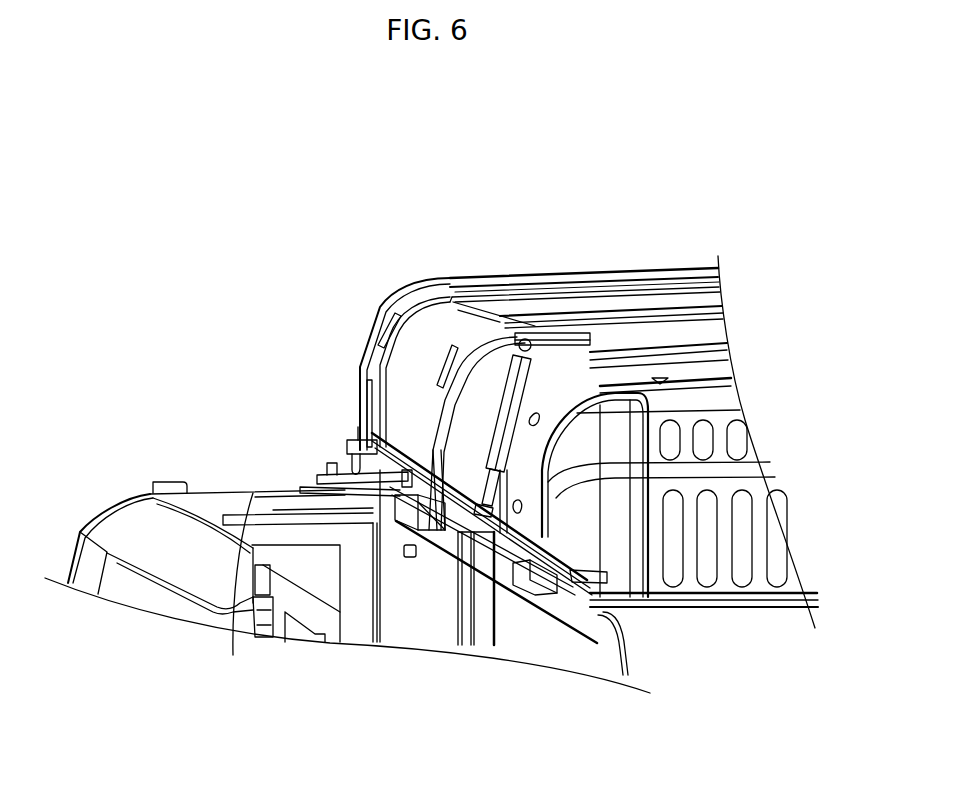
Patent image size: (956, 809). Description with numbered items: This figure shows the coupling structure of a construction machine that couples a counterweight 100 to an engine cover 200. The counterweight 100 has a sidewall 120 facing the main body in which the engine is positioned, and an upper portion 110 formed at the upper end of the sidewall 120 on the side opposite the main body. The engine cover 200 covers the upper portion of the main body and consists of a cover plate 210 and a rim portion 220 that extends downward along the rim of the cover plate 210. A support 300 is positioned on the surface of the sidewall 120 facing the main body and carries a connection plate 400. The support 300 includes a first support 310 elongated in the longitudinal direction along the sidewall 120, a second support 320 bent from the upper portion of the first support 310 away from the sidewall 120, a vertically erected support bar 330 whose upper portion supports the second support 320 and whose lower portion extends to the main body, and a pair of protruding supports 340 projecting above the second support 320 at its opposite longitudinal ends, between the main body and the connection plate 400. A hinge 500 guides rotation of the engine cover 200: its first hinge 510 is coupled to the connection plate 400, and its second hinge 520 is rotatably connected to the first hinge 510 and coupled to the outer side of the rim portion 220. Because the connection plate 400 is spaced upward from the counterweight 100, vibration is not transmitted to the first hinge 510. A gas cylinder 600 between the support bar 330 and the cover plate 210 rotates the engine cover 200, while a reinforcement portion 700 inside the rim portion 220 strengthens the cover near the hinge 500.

The counterweight 100 is at (200, 478).
The upper portion 110 is at (233, 655).
The sidewall 120 is at (375, 612).
The engine cover 200 is at (587, 270).
The cover plate 210 is at (512, 275).
The rim portion 220 is at (357, 438).
The support 300 is at (557, 622).
The first support 310 is at (618, 650).
The second support 320 is at (510, 565).
The support bar 330 is at (480, 625).
The protruding support 340 is at (407, 558).
The connection plate 400 is at (357, 505).
The hinge 500 is at (330, 446).
The first hinge 510 is at (323, 480).
The second hinge 520 is at (353, 450).
The gas cylinder 600 is at (512, 463).
The reinforcement portion 700 is at (400, 410).